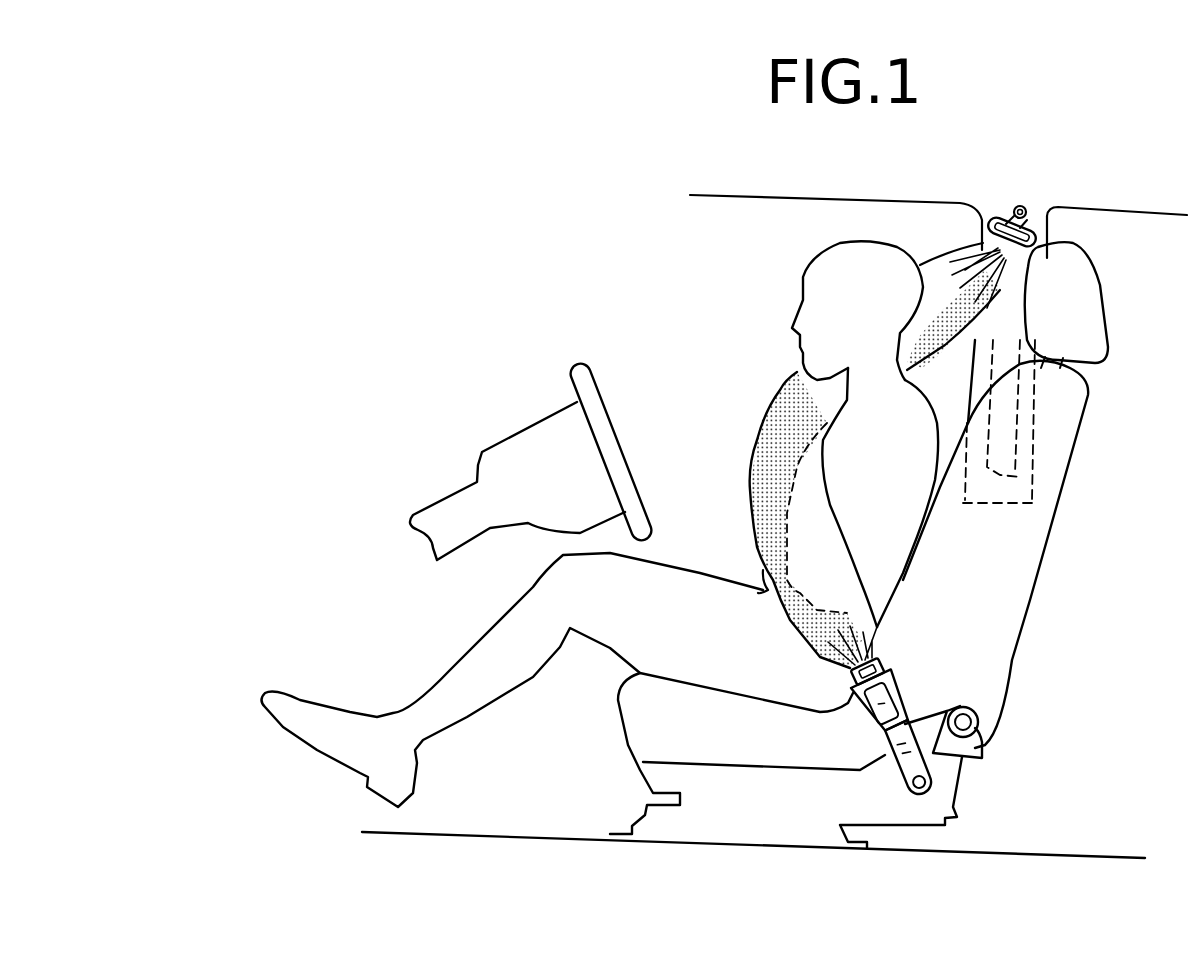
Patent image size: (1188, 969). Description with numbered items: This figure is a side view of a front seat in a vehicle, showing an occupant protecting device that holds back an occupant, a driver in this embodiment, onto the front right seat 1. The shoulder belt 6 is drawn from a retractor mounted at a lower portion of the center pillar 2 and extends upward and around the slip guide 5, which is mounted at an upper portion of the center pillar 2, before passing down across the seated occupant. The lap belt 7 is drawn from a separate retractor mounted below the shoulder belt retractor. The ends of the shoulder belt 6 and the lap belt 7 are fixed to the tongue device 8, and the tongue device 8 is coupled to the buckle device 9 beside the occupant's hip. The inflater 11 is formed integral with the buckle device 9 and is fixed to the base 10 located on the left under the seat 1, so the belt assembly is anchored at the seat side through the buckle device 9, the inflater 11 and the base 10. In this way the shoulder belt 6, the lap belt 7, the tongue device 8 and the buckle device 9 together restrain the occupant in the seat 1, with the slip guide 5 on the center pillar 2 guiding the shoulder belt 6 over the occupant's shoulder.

The front right seat 1 is at (1045, 584).
The center pillar 2 is at (720, 441).
The slip guide 5 is at (1047, 223).
The shoulder belt 6 is at (776, 383).
The lap belt 7 is at (773, 598).
The tongue device 8 is at (896, 665).
The buckle device 9 is at (910, 698).
The base 10 is at (778, 830).
The inflater 11 is at (893, 765).